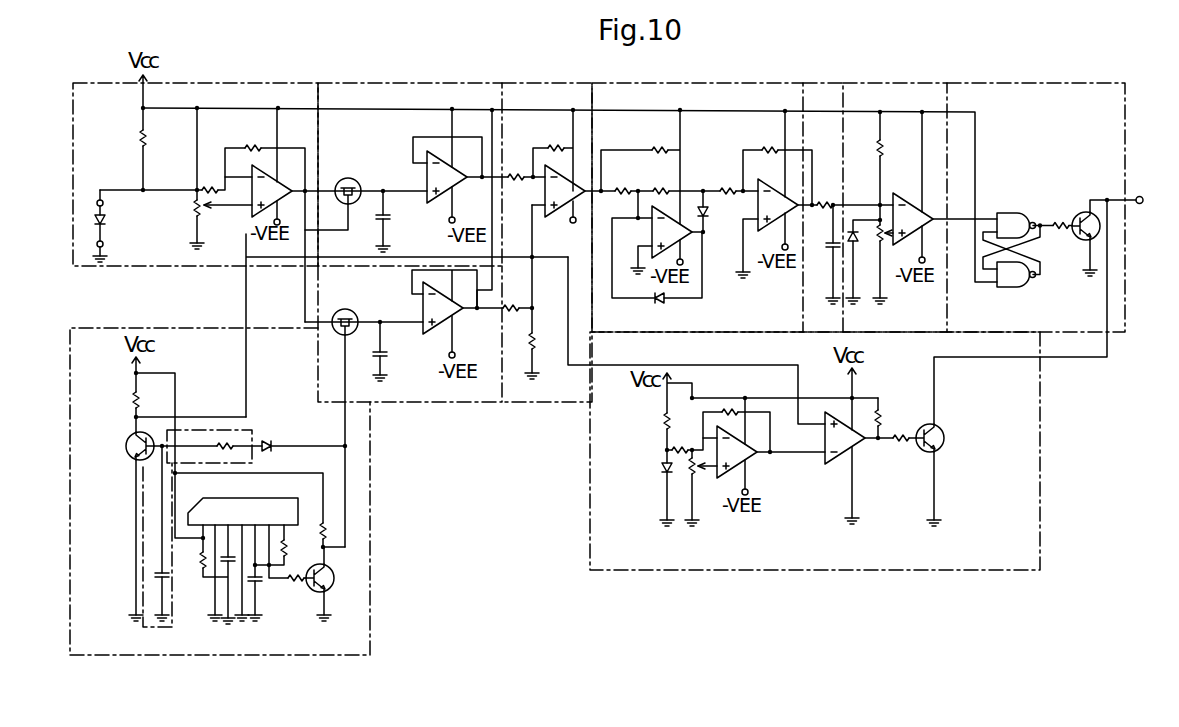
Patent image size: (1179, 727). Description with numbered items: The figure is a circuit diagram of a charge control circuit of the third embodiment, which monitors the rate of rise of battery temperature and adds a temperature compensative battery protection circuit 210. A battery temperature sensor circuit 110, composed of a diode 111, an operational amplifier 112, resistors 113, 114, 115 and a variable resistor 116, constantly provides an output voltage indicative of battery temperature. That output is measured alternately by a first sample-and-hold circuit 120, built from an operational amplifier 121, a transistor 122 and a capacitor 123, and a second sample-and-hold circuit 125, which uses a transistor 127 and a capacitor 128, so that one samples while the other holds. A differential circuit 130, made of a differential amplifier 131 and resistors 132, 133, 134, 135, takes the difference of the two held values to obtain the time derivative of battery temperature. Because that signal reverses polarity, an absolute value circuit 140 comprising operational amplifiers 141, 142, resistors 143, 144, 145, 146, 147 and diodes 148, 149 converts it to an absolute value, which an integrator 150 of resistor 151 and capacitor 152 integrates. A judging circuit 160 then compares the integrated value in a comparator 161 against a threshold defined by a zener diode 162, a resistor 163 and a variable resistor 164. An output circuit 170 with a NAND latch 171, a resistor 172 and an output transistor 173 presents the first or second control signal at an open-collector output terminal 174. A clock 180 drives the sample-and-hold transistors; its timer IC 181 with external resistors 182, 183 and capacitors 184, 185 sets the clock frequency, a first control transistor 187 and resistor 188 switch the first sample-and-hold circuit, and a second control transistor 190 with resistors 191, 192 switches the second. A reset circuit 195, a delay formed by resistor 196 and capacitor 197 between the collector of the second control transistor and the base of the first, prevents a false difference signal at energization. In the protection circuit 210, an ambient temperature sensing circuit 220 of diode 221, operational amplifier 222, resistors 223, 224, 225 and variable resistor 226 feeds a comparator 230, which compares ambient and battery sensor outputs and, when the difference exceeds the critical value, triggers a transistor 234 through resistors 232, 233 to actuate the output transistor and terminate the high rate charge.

The sensor circuit 110 is at (205, 80).
The diode 111 is at (105, 222).
The operational amplifier 112 is at (248, 215).
The resistor 113 is at (139, 141).
The resistor 114 is at (205, 188).
The resistor 115 is at (250, 147).
The variable resistor 116 is at (194, 208).
The first sample-and-hold circuit 120 is at (400, 80).
The operational amplifier 121 is at (425, 177).
The transistor 122 is at (349, 178).
The capacitor 123 is at (390, 216).
The second sample-and-hold circuit 125 is at (448, 406).
The transistor 127 is at (350, 309).
The capacitor 128 is at (385, 355).
The differential circuit 130 is at (548, 80).
The differential amplifier 131 is at (548, 212).
The resistor 132 is at (514, 172).
The resistor 133 is at (556, 146).
The resistor 134 is at (508, 312).
The resistor 135 is at (533, 345).
The absolute value circuit 140 is at (692, 80).
The operational amplifier 141 is at (652, 232).
The operational amplifier 142 is at (760, 224).
The resistor 143 is at (618, 186).
The resistor 144 is at (661, 189).
The resistor 145 is at (728, 189).
The resistor 146 is at (660, 149).
The resistor 147 is at (770, 149).
The diode 148 is at (667, 299).
The diode 149 is at (705, 218).
The integrator 150 is at (828, 80).
The resistor 151 is at (825, 202).
The capacitor 152 is at (828, 254).
The judging circuit 160 is at (902, 80).
The comparator 161 is at (898, 193).
The zener diode 162 is at (856, 246).
The resistor 163 is at (883, 140).
The variable resistor 164 is at (882, 240).
The output circuit 170 is at (1037, 80).
The NAND latch 171 is at (1007, 212).
The resistor 172 is at (1061, 222).
The output transistor 173 is at (1080, 240).
The output terminal 174 is at (1140, 204).
The clock 180 is at (374, 541).
The timer IC 181 is at (299, 500).
The resistor 182 is at (290, 547).
The resistor 183 is at (201, 566).
The capacitor 184 is at (258, 585).
The capacitor 185 is at (231, 588).
The first control transistor 187 is at (127, 452).
The resistor 188 is at (131, 400).
The second control transistor 190 is at (336, 584).
The resistor 191 is at (327, 524).
The resistor 192 is at (294, 582).
The reset circuit 195 is at (142, 537).
The resistor 196 is at (228, 442).
The capacitor 197 is at (160, 580).
The protection circuit 210 is at (586, 576).
The sensing circuit 220 is at (648, 458).
The diode 221 is at (660, 471).
The operational amplifier 222 is at (721, 473).
The resistor 223 is at (661, 415).
The resistor 224 is at (672, 448).
The resistor 225 is at (729, 408).
The variable resistor 226 is at (688, 473).
The comparator 230 is at (827, 460).
The resistor 232 is at (879, 410).
The resistor 233 is at (900, 442).
The transistor 234 is at (946, 448).